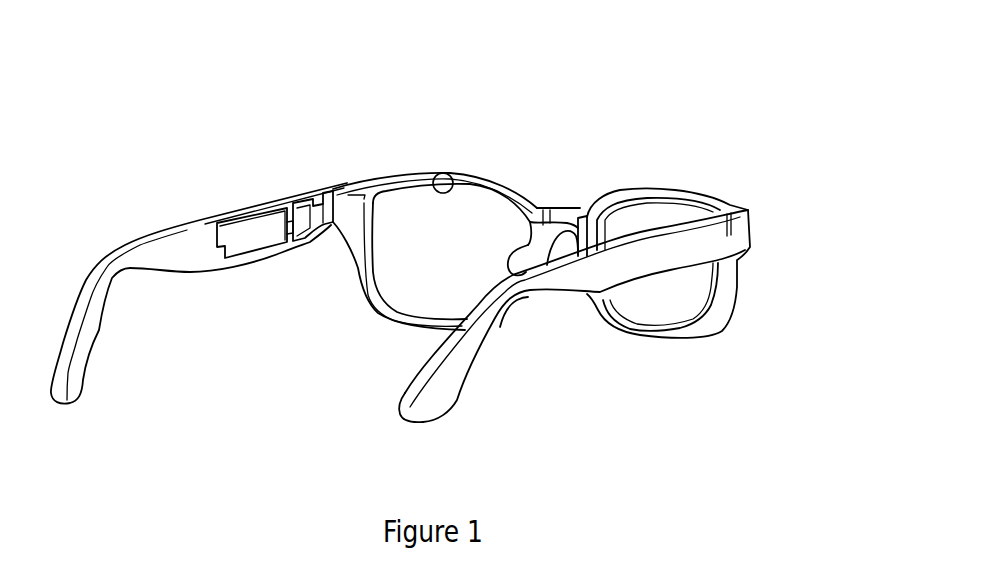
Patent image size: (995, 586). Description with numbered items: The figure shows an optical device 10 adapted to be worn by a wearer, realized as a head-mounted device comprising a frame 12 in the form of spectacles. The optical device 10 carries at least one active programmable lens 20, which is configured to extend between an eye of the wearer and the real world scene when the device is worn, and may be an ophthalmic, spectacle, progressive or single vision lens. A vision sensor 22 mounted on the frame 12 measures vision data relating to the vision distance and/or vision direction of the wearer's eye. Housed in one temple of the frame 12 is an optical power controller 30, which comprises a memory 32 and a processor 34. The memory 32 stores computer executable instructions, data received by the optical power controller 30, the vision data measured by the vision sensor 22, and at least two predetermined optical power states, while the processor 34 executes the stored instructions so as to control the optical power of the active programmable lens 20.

The optical device 10 is at (797, 146).
The frame 12 is at (622, 263).
The active programmable lens 20 is at (390, 270).
The vision sensor 22 is at (442, 178).
The optical power controller 30 is at (219, 209).
The memory 32 is at (260, 230).
The processor 34 is at (308, 216).